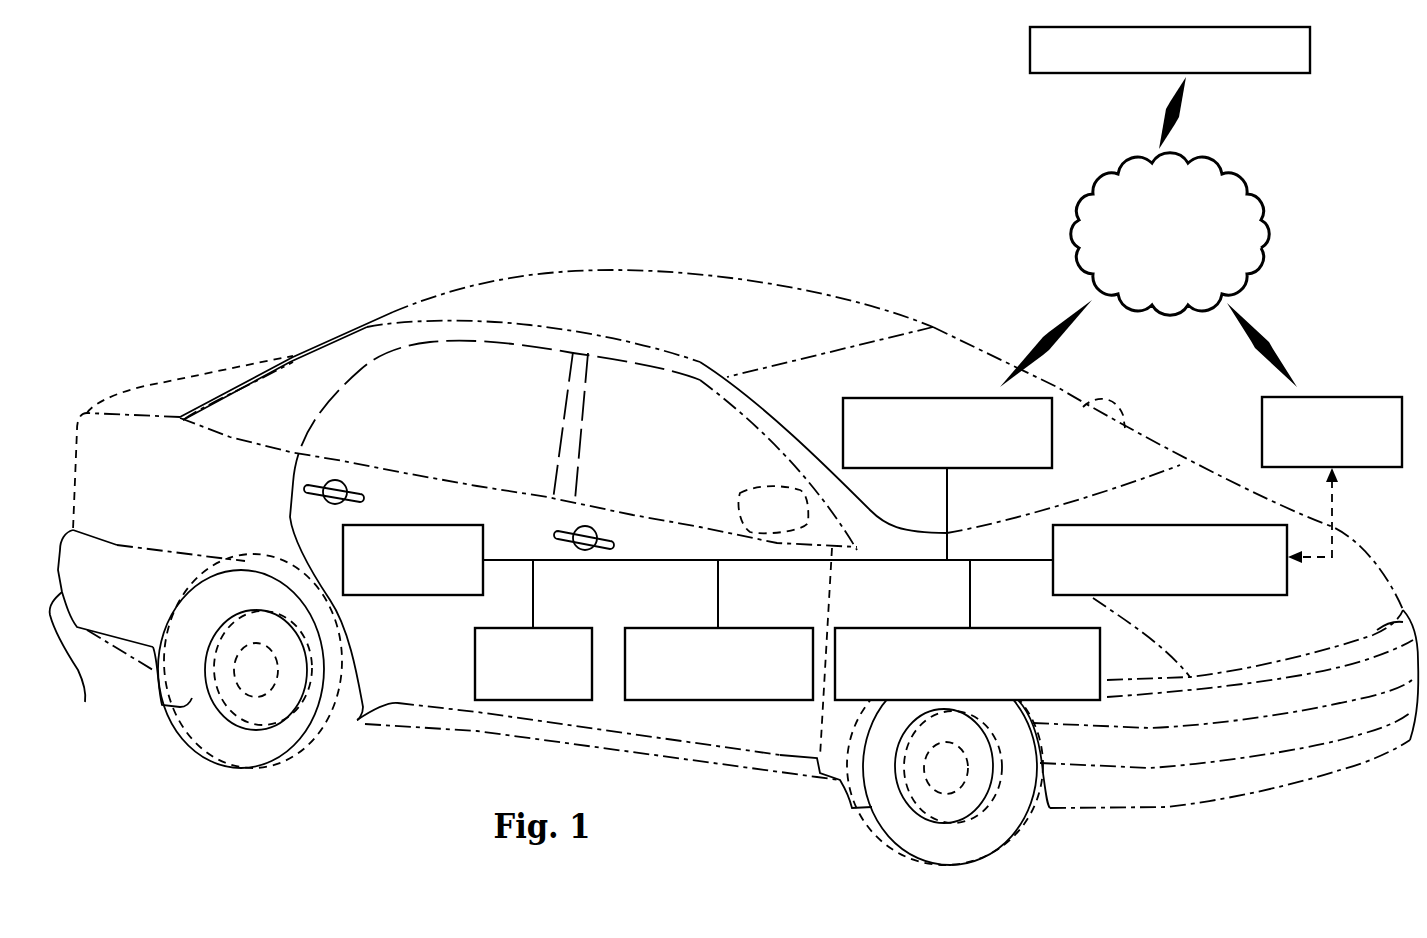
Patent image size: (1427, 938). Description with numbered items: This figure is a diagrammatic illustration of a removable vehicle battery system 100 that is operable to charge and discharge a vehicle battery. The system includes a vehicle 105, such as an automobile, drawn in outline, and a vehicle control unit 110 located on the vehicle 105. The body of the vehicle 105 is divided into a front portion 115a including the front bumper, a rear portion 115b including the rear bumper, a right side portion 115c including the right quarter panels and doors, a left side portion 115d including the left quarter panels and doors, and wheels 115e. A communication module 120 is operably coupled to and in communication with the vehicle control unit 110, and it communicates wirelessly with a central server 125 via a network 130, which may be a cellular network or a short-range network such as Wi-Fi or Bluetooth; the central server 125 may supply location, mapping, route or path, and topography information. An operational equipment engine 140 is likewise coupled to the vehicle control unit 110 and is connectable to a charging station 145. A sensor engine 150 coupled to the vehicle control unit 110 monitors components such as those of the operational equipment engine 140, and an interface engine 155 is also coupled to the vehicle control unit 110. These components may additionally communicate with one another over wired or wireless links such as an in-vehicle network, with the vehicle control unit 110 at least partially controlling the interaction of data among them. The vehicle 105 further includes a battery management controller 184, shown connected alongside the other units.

The removable vehicle battery system 100 is at (734, 443).
The vehicle 105 is at (546, 266).
The vehicle control unit 110 is at (681, 627).
The front portion 115a is at (1333, 767).
The rear portion 115b is at (147, 572).
The right side portion 115c is at (443, 720).
The left side portion 115d is at (820, 294).
The wheels 115e is at (233, 760).
The communication module 120 is at (937, 397).
The central server 125 is at (1313, 46).
The network 130 is at (1263, 212).
The operational equipment engine 140 is at (1203, 597).
The charging station 145 is at (1343, 395).
The sensor engine 150 is at (568, 627).
The interface engine 155 is at (417, 597).
The battery management controller 184 is at (1000, 627).